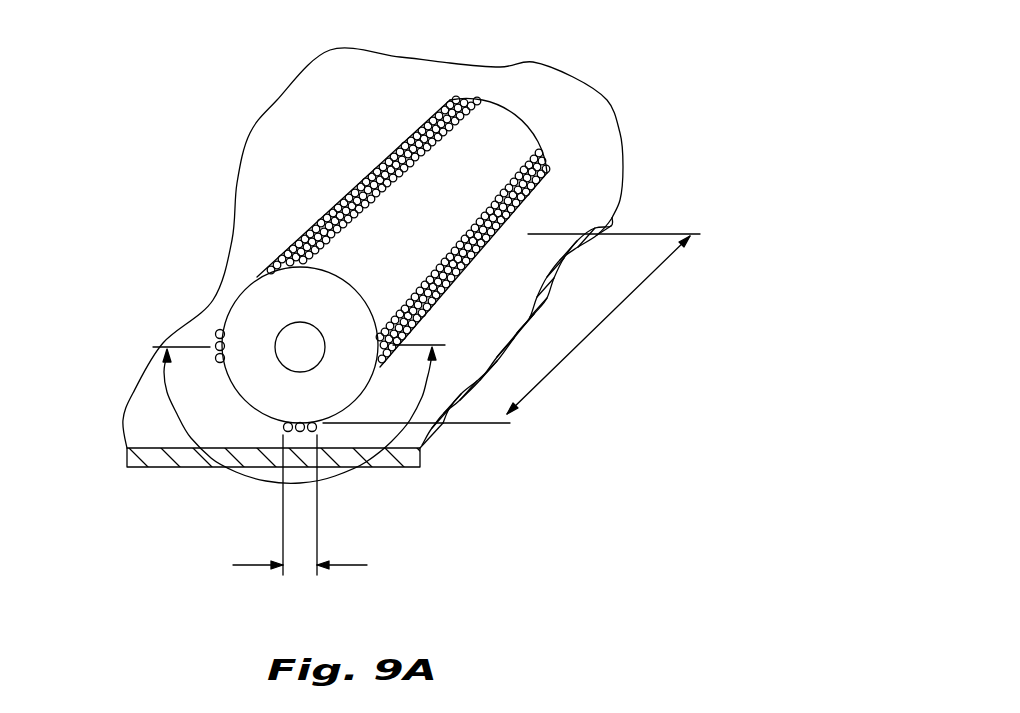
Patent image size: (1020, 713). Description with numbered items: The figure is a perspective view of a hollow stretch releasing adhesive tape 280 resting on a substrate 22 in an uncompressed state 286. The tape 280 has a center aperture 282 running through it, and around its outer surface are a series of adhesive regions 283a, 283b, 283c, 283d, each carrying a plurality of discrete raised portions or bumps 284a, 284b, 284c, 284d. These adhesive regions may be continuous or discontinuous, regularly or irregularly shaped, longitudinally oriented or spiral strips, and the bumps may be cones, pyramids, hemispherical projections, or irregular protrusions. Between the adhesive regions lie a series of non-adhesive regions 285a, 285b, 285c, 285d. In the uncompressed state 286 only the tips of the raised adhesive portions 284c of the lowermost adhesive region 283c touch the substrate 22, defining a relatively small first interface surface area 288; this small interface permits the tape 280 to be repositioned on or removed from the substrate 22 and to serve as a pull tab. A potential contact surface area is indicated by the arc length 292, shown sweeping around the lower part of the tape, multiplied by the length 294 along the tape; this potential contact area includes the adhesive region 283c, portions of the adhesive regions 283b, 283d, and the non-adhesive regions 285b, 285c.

The substrate 22 is at (337, 63).
The stretch releasing adhesive tape 280 is at (303, 128).
The center aperture 282 is at (286, 331).
The adhesive region 283a is at (414, 130).
The adhesive region 283b is at (548, 167).
The adhesive region 283c is at (319, 434).
The adhesive region 283d is at (214, 367).
The raised portions or bumps 284a is at (473, 99).
The raised portions or bumps 284b is at (549, 197).
The raised portions or bumps 284c is at (300, 431).
The raised portions or bumps 284d is at (215, 360).
The non-adhesive region 285a is at (505, 128).
The non-adhesive region 285b is at (424, 402).
The non-adhesive region 285c is at (216, 458).
The non-adhesive region 285d is at (273, 267).
The uncompressed state 286 is at (358, 190).
The first interface surface area 288 is at (350, 565).
The arc length 292 is at (181, 413).
The length 294 is at (590, 334).